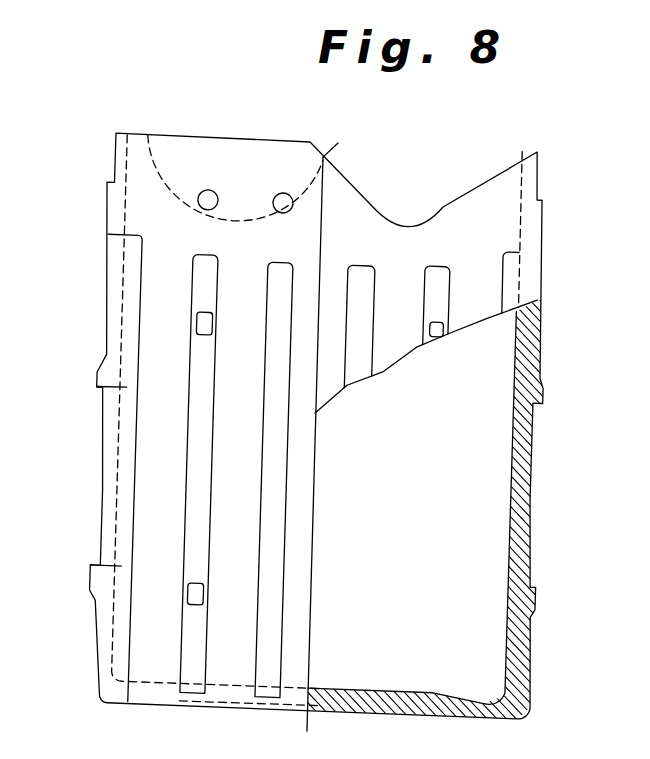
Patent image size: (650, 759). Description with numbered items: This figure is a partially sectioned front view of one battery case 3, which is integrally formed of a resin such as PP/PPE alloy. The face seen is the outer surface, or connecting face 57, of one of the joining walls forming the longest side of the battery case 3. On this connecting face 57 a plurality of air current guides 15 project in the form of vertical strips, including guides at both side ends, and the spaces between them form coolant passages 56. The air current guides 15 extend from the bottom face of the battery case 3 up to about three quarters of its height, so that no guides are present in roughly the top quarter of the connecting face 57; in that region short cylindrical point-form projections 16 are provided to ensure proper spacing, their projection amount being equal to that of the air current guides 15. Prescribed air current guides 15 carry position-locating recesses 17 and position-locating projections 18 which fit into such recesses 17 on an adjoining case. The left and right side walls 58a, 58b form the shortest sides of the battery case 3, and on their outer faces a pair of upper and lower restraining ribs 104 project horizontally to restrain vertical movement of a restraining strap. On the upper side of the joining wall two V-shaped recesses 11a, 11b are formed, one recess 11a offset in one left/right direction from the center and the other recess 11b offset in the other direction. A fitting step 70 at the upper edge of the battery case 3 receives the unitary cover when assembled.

The battery case 3 is at (230, 134).
The V-shaped recess 11a is at (450, 200).
The V-shaped recess 11b is at (183, 183).
The air current guide 15 is at (113, 322).
The point-form projection 16 is at (210, 205).
The position-locating recess 17 is at (192, 585).
The position-locating projection 18 is at (203, 312).
The coolant passage 56 is at (242, 313).
The connecting face 57 is at (470, 242).
The side wall 58a is at (100, 497).
The side wall 58b is at (523, 470).
The fitting step 70 is at (115, 152).
The restraining rib 104 is at (97, 387).